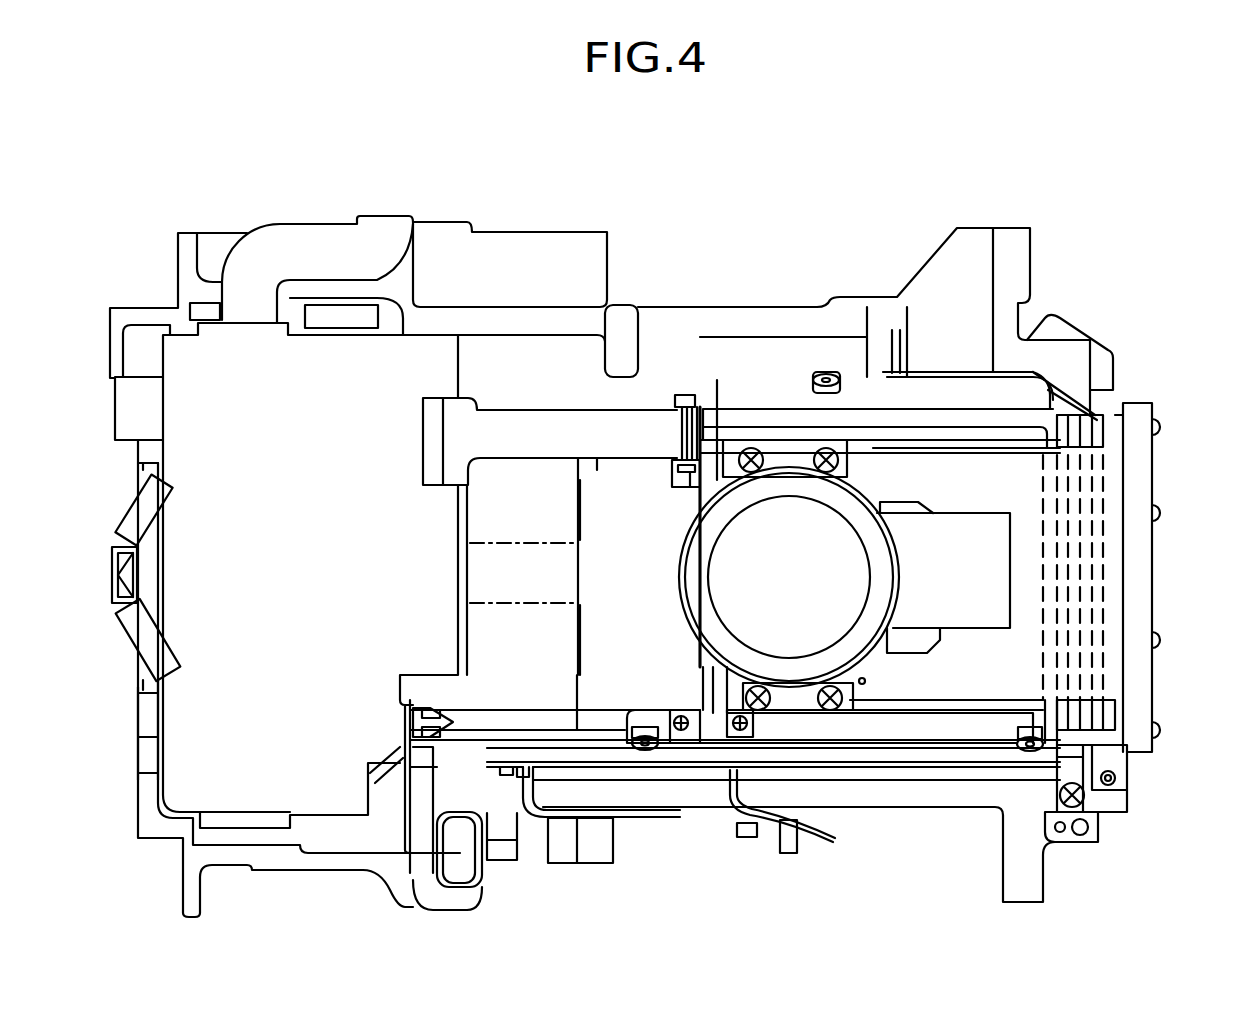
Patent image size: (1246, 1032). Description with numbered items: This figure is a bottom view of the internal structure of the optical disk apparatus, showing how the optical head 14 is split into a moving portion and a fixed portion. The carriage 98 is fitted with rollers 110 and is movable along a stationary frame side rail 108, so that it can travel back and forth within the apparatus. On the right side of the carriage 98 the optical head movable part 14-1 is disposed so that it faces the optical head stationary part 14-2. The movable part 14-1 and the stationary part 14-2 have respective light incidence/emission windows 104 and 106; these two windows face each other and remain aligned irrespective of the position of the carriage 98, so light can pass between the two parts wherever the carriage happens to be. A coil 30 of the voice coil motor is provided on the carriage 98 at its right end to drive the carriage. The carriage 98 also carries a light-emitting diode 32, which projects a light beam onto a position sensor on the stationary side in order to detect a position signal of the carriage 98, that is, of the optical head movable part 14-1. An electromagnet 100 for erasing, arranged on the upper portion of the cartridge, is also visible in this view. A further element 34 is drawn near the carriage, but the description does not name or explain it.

The optical head 14 is at (838, 627).
The optical head movable part 14-1 is at (628, 473).
The optical head stationary part 14-2 is at (384, 594).
The coil 30 is at (1097, 415).
The light-emitting diode 32 is at (715, 740).
The bracket 34 is at (677, 757).
The carriage 98 is at (1112, 508).
The electromagnet 100 is at (1020, 550).
The light incidence/emission window 104 is at (577, 583).
The light incidence/emission window 106 is at (460, 577).
The stationary frame side rail 108 is at (897, 762).
The rollers 110 is at (829, 373).